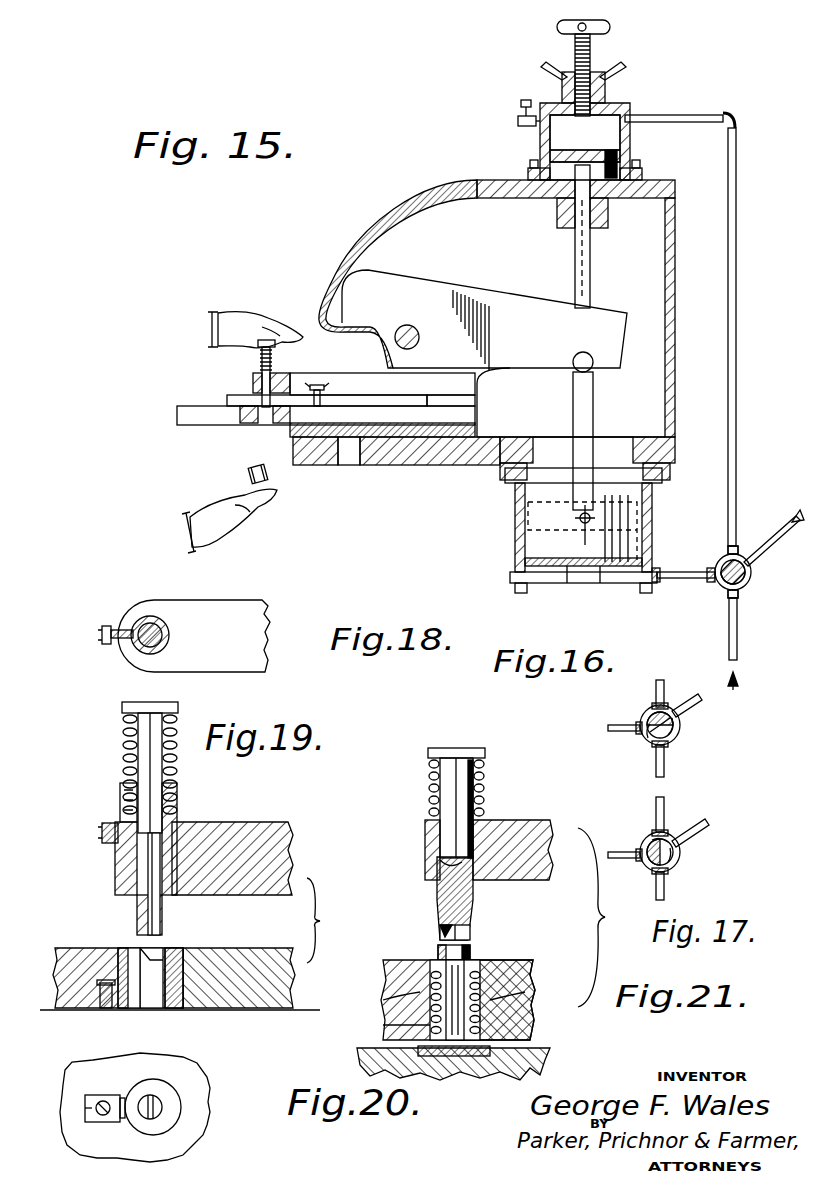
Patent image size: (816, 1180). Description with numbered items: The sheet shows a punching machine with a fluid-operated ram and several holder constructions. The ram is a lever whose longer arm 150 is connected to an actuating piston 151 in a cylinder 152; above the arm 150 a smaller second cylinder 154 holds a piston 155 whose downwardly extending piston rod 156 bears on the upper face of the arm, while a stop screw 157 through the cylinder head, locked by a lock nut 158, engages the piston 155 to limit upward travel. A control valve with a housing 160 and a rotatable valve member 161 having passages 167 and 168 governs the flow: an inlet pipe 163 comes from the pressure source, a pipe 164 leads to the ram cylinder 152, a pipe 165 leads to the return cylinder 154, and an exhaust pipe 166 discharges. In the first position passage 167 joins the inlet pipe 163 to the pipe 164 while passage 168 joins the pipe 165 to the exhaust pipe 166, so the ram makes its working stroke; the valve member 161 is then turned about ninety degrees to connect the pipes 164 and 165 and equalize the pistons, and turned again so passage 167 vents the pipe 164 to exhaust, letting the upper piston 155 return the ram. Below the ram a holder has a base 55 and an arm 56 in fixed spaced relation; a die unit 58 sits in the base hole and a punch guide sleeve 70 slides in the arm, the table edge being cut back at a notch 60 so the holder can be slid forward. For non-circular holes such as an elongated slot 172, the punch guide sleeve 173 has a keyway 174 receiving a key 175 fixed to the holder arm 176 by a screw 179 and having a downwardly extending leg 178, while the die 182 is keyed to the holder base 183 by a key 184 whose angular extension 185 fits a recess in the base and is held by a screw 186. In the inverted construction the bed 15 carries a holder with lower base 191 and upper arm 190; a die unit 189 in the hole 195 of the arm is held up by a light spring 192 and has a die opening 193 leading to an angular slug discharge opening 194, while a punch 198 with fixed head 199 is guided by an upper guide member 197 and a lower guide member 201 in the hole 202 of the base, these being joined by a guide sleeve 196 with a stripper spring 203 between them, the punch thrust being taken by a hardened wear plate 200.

In FIG. 20, the bed 15 is at (357, 1055).
In FIG. 15, the base 55 is at (388, 418).
In FIG. 15, the arm 56 is at (362, 378).
In FIG. 15, the die unit 58 is at (270, 478).
In FIG. 15, the notch 60 is at (265, 434).
In FIG. 15, the punch guide sleeve 70 is at (253, 385).
In FIG. 15, the lever arm of the ram 150 is at (484, 390).
In FIG. 15, the actuating piston 151 is at (522, 538).
In FIG. 15, the cylinder 152 is at (515, 555).
In FIG. 15, the second cylinder 154 is at (540, 140).
In FIG. 15, the piston 155 is at (595, 165).
In FIG. 15, the piston rod 156 is at (591, 248).
In FIG. 15, the stop screw 157 is at (592, 48).
In FIG. 15, the lock nut 158 is at (605, 82).
In FIG. 15, the valve housing 160 is at (716, 562).
In FIG. 16, the valve housing 160 is at (681, 727).
In FIG. 17, the valve housing 160 is at (652, 868).
In FIG. 15, the rotatable valve member 161 is at (752, 573).
In FIG. 16, the rotatable valve member 161 is at (660, 725).
In FIG. 17, the rotatable valve member 161 is at (680, 857).
In FIG. 15, the inlet pipe 163 is at (738, 629).
In FIG. 16, the inlet pipe 163 is at (665, 769).
In FIG. 17, the inlet pipe 163 is at (665, 896).
In FIG. 15, the pipe 164 is at (690, 580).
In FIG. 16, the pipe 164 is at (622, 713).
In FIG. 17, the pipe 164 is at (625, 837).
In FIG. 15, the pipe 165 is at (737, 352).
In FIG. 16, the pipe 165 is at (662, 680).
In FIG. 17, the pipe 165 is at (660, 803).
In FIG. 15, the exhaust pipe 166 is at (755, 556).
In FIG. 16, the exhaust pipe 166 is at (677, 706).
In FIG. 17, the exhaust pipe 166 is at (688, 830).
In FIG. 15, the passage 167 is at (742, 588).
In FIG. 16, the passage 167 is at (648, 740).
In FIG. 17, the passage 167 is at (655, 835).
In FIG. 15, the passage 168 is at (744, 552).
In FIG. 16, the passage 168 is at (678, 736).
In FIG. 17, the passage 168 is at (678, 861).
In FIG. 21, the elongated slot 172 is at (163, 1100).
In FIG. 18, the punch guide sleeve 173 is at (170, 632).
In FIG. 19, the punch guide sleeve 173 is at (178, 812).
In FIG. 18, the keyway 174 is at (118, 655).
In FIG. 19, the keyway 174 is at (120, 795).
In FIG. 18, the key 175 is at (128, 621).
In FIG. 19, the key 175 is at (120, 815).
In FIG. 18, the arm 176 is at (230, 672).
In FIG. 19, the arm 176 is at (268, 822).
In FIG. 19, the leg 178 is at (108, 845).
In FIG. 18, the screw 179 is at (160, 645).
In FIG. 19, the screw 179 is at (112, 836).
In FIG. 19, the die 182 is at (172, 952).
In FIG. 21, the die 182 is at (158, 1087).
In FIG. 19, the base 183 is at (242, 955).
In FIG. 21, the base 183 is at (205, 1120).
In FIG. 19, the key 184 is at (125, 946).
In FIG. 21, the key 184 is at (122, 1098).
In FIG. 19, the angular extension 185 is at (98, 1012).
In FIG. 21, the angular extension 185 is at (90, 1107).
In FIG. 19, the screw 186 is at (105, 1012).
In FIG. 21, the screw 186 is at (102, 1112).
In FIG. 20, the die unit 189 is at (440, 807).
In FIG. 20, the upper arm 190 is at (425, 855).
In FIG. 20, the lower base 191 is at (395, 1030).
In FIG. 20, the light spring 192 is at (485, 800).
In FIG. 20, the die opening 193 is at (440, 934).
In FIG. 20, the slug discharge opening 194 is at (440, 915).
In FIG. 20, the hole 195 is at (470, 880).
In FIG. 20, the guide sleeve 196 is at (438, 965).
In FIG. 20, the upper guide member 197 is at (470, 945).
In FIG. 20, the punch 198 is at (470, 952).
In FIG. 20, the head 199 is at (478, 1050).
In FIG. 20, the hardened wear plate 200 is at (455, 1048).
In FIG. 20, the lower guide member 201 is at (525, 1028).
In FIG. 20, the hole 202 is at (525, 985).
In FIG. 20, the stripper spring 203 is at (395, 1012).